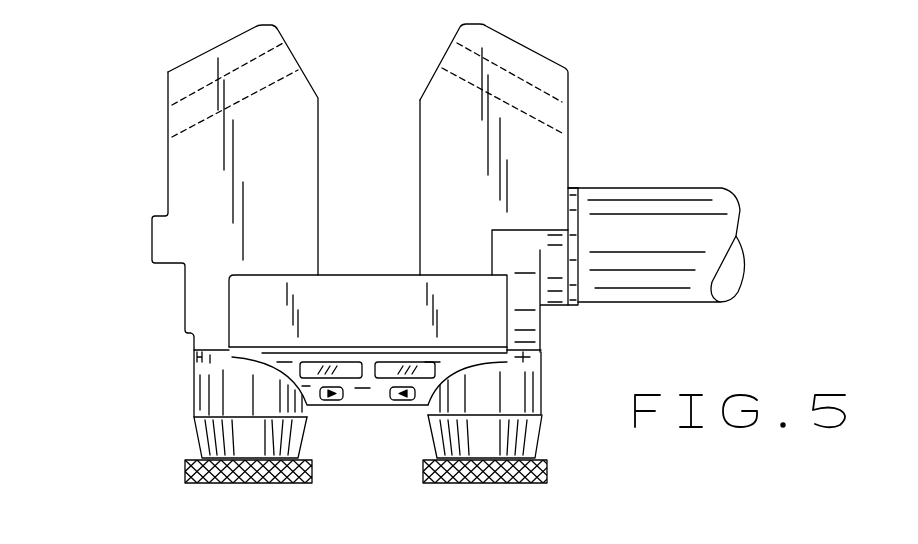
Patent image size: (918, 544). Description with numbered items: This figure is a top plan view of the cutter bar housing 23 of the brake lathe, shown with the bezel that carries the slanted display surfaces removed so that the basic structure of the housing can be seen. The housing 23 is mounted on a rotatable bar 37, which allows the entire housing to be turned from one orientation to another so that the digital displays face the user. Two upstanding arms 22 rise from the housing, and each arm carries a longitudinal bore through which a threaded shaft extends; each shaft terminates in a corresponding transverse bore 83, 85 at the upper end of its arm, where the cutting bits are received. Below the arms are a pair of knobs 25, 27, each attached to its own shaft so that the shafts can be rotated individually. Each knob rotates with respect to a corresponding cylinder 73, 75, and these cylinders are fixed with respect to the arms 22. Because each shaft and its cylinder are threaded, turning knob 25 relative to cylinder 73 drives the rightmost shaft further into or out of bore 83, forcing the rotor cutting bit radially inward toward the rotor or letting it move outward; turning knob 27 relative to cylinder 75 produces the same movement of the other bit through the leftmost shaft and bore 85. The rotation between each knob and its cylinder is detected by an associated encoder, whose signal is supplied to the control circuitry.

The arms 22 is at (292, 216).
The housing 23 is at (145, 326).
The knob 25 is at (497, 442).
The knob 27 is at (264, 442).
The rotatable bar 37 is at (661, 246).
The cylinder 73 is at (520, 362).
The cylinder 75 is at (195, 357).
The transverse bore 83 is at (552, 98).
The transverse bore 85 is at (265, 53).